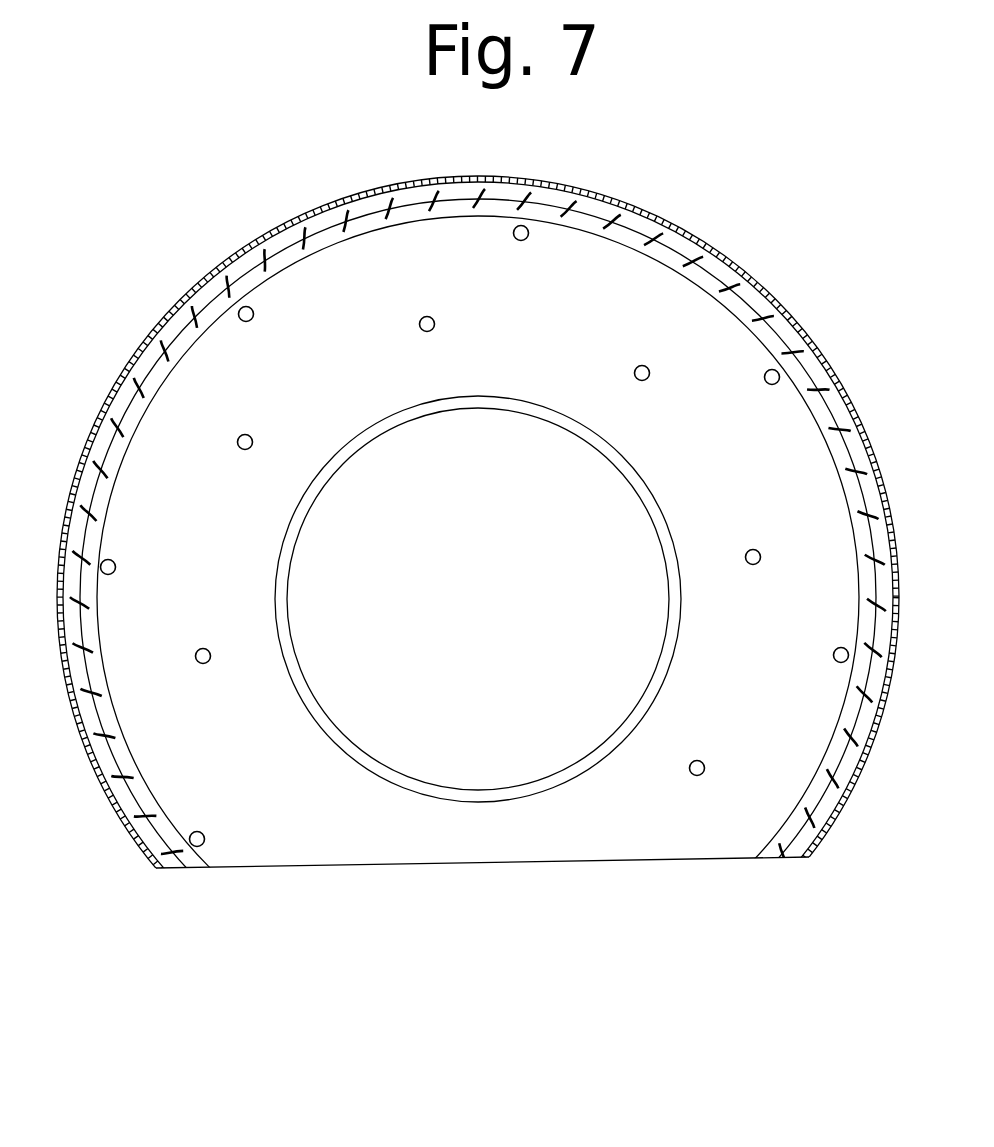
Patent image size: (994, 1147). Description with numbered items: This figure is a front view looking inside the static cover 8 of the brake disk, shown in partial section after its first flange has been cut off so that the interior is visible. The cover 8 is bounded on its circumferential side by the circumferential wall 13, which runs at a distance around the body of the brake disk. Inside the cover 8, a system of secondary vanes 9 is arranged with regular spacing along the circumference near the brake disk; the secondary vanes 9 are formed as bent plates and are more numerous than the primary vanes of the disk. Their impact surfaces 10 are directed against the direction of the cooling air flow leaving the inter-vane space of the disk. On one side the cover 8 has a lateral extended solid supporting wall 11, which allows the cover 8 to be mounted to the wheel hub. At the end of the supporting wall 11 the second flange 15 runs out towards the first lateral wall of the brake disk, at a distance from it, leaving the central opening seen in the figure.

The cover 8 is at (655, 862).
The secondary vanes 9 is at (190, 858).
The impact surfaces 10 is at (800, 815).
The supporting wall 11 is at (525, 828).
The circumferential wall 13 is at (730, 268).
The second flange 15 is at (285, 563).